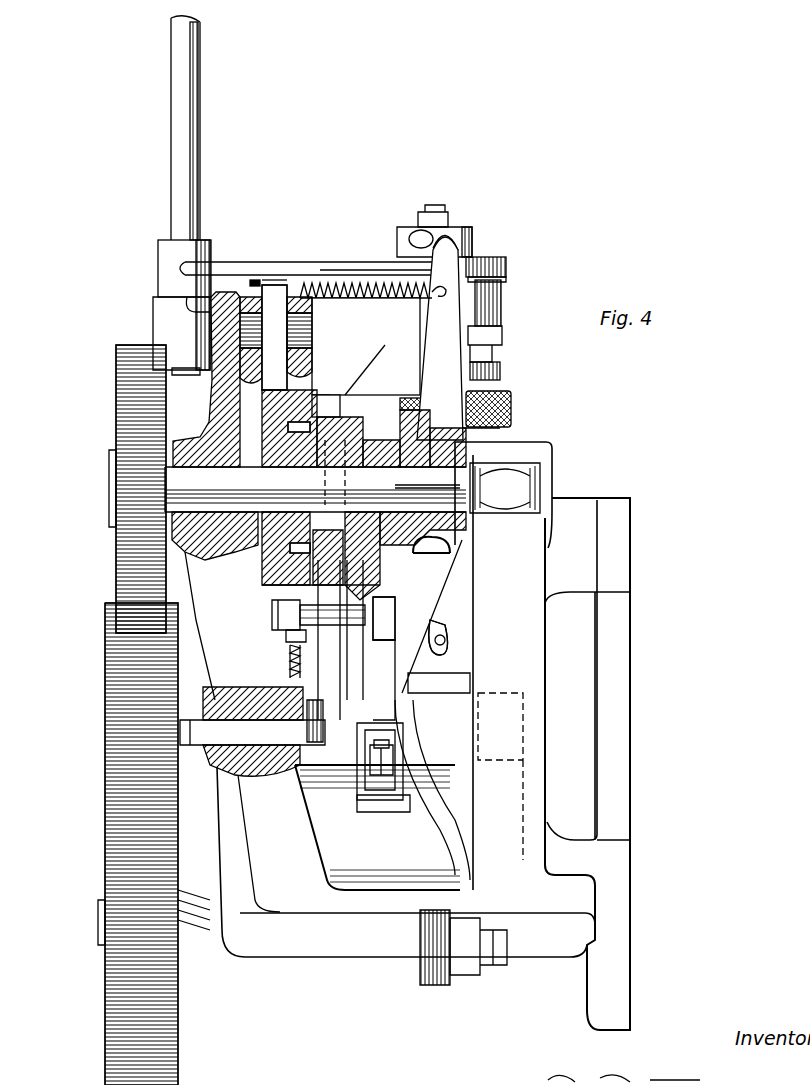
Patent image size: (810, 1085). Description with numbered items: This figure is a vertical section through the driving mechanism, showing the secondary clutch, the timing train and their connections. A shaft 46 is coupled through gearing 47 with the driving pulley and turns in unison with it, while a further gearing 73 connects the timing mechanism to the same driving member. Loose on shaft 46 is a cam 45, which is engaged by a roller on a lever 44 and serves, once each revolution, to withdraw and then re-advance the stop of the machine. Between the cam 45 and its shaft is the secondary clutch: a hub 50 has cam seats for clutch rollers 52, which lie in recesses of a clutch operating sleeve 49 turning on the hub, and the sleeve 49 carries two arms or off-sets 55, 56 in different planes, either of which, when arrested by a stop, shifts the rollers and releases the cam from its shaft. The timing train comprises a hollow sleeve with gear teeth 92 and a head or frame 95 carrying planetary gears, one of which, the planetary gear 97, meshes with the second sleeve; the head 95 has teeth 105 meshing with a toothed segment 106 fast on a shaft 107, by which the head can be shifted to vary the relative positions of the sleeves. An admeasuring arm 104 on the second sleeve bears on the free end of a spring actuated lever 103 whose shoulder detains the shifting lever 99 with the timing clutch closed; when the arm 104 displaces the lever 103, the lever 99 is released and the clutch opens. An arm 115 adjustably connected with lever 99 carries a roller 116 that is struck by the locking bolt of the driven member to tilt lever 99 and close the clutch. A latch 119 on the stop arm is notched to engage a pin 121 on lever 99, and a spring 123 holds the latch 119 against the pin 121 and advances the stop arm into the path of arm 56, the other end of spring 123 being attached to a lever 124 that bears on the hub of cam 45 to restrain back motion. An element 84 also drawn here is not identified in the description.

The shaft 107 is at (192, 186).
The toothed segment 106 is at (358, 257).
The admeasuring arm 104 is at (420, 237).
The teeth 105 is at (506, 266).
The planetary gear 97 is at (506, 309).
The knurled collar 84 is at (419, 418).
The spring actuated lever 103 is at (440, 338).
The clutch operating sleeve 49 is at (400, 315).
The head or frame 95 is at (378, 322).
The arm or off-set 56 is at (365, 362).
The lever 44 is at (340, 368).
The cam 45 is at (298, 392).
The shaft 46 is at (315, 489).
The hub 50 is at (392, 472).
The clutch rollers 52 is at (425, 560).
The gear teeth 92 is at (395, 603).
The shifting lever 99 is at (423, 637).
The arm or off-set 55 is at (300, 612).
The pin 121 is at (300, 614).
The latch 119 is at (290, 637).
The spring 123 is at (290, 660).
The gearing 47 is at (116, 430).
The gearing 73 is at (160, 1030).
The lever 124 is at (280, 752).
The arm 115 is at (445, 842).
The roller 116 is at (438, 975).